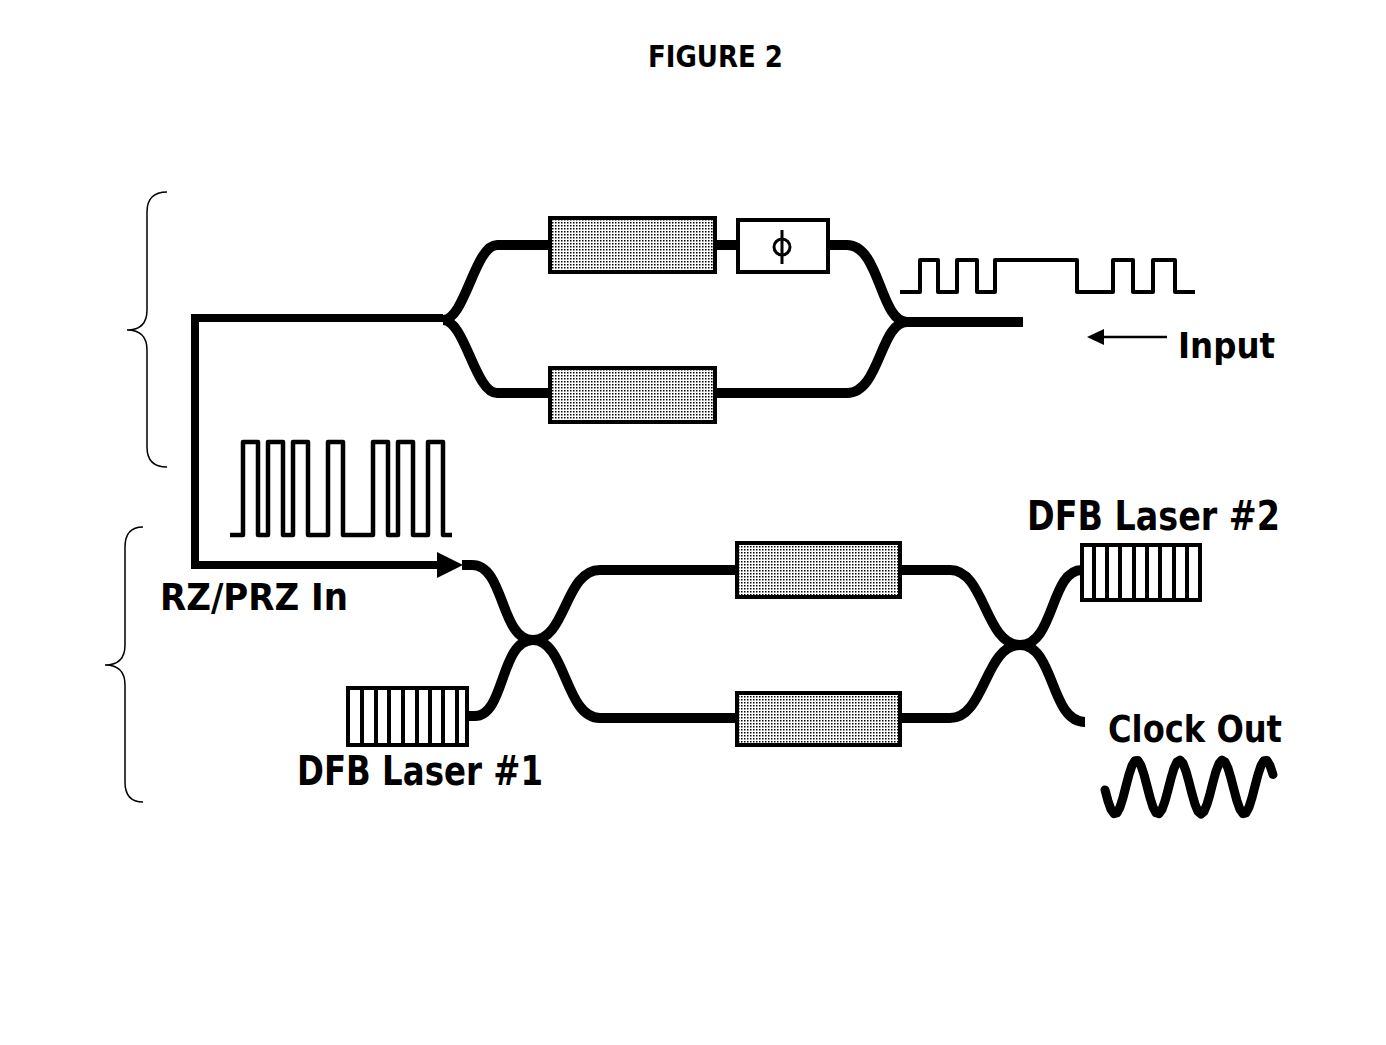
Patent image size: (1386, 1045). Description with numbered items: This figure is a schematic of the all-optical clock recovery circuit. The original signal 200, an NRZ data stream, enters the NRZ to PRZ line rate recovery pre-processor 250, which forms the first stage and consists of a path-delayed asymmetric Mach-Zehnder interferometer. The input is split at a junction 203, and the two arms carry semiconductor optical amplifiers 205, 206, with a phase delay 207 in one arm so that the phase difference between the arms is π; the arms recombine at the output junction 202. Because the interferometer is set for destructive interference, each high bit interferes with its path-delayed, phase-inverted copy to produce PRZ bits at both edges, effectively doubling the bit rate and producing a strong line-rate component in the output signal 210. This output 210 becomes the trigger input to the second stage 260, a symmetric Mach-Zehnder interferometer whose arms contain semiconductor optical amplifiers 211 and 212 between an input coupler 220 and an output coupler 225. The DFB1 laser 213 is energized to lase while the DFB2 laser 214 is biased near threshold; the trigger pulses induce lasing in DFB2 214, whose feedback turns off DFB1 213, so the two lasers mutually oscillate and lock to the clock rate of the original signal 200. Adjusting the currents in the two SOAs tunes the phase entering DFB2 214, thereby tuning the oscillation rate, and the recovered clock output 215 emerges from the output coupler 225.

The original signal 200 is at (1205, 278).
The input waveguide / Y-junction coupler 202 is at (905, 320).
The Y-junction splitter 203 is at (440, 313).
The semiconductor optical amplifier 205 is at (635, 195).
The semiconductor optical amplifier 206 is at (693, 432).
The phase delay 207 is at (775, 195).
The output signal of the AMZI 210 is at (445, 492).
The semiconductor optical amplifier 211 is at (830, 532).
The semiconductor optical amplifier 212 is at (787, 747).
The DFB1 laser 213 is at (340, 726).
The DFB2 laser 214 is at (1222, 573).
The clock output signal 215 is at (1244, 787).
The input directional coupler 220 is at (533, 647).
The output directional coupler 225 is at (1025, 663).
The NRZ to PRZ line rate recovery pre-processor 250 is at (457, 329).
The second stage 260 is at (105, 664).